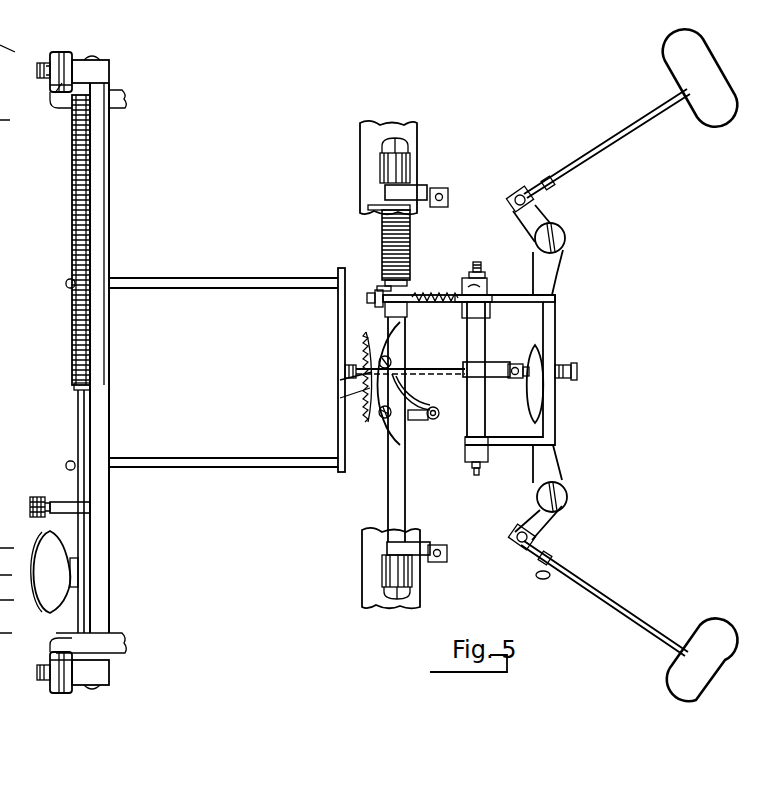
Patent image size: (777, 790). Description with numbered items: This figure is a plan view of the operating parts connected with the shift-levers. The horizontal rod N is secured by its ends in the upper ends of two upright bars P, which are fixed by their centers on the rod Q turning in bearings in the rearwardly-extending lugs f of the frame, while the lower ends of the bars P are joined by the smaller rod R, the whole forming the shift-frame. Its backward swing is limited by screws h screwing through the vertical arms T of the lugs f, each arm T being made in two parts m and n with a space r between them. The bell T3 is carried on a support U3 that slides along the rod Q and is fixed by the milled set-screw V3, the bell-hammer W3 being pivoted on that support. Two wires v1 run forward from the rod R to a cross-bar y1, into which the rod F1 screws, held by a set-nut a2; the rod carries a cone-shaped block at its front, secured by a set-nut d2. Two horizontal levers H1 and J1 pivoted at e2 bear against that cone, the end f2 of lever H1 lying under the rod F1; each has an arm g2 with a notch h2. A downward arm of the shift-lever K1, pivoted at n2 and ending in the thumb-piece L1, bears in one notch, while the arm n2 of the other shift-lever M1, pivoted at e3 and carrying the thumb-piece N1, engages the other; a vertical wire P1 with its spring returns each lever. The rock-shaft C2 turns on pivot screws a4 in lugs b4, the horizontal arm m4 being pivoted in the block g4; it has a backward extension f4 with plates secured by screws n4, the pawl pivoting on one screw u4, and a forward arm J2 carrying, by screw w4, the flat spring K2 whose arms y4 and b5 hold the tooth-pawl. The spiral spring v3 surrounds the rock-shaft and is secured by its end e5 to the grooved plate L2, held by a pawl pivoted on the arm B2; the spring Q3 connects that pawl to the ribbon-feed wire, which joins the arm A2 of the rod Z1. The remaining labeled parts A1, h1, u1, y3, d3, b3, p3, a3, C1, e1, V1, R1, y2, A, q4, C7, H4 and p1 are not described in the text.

The horizontal rod N is at (109, 193).
The rack A1 is at (72, 236).
The vertical arm T is at (52, 652).
The screw h is at (36, 672).
The part of vertical arm m is at (76, 705).
The upright bar P is at (124, 672).
The lug f is at (133, 643).
The rear part of vertical arm n is at (50, 705).
The space r is at (50, 626).
The rod Q is at (74, 394).
The rod R is at (78, 418).
The wire v1 is at (196, 462).
The cross-bar y1 is at (338, 339).
The set-screw V3 is at (26, 506).
The bell hammer W3 is at (56, 512).
The bell T3 is at (38, 556).
The bell support U3 is at (78, 570).
The set-nut a2 is at (345, 370).
The rod F1 is at (436, 372).
The securing-screw u4 is at (368, 422).
The link h1 is at (333, 391).
The link u1 is at (331, 407).
The backward extension f4 is at (388, 432).
The securing-screw n4 is at (392, 424).
The horizontal arm J2 is at (416, 420).
The screw w4 is at (439, 413).
The spring arm b5 is at (418, 398).
The flat spring K2 is at (437, 389).
The rod Z1 is at (470, 405).
The spring arm y4 is at (408, 420).
The grooved plate L2 is at (375, 302).
The spring end e5 is at (380, 286).
The spiral spring Q3 is at (504, 460).
The arm B2 is at (407, 310).
The pin y3 is at (455, 302).
The rock-shaft C2 is at (405, 495).
The block d3 is at (452, 456).
The screw b3 is at (456, 468).
The pin p3 is at (490, 295).
The pin a3 is at (512, 445).
The arm A2 is at (490, 312).
The lever end f2 is at (512, 358).
The bearing block C1 is at (523, 378).
The pin e1 is at (545, 355).
The disc V1 is at (520, 392).
The set-nut d2 is at (577, 371).
The frame R1 is at (555, 395).
The arm y2 is at (566, 415).
The horizontal lever J1 is at (556, 465).
The frame bracket A is at (350, 563).
The pivot screw a4 is at (396, 610).
The lug b4 is at (432, 568).
The pin q4 is at (459, 167).
The horizontal arm m4 is at (428, 528).
The block C7 is at (455, 180).
The vertical wire P1 is at (486, 183).
The spiral spring v3 is at (382, 250).
The block H4 is at (447, 553).
The block g4 is at (448, 538).
The notch h2 is at (570, 527).
The shift-lever K1 is at (607, 143).
The pivot / downwardly-projecting arm n2 is at (556, 183).
The thumb-piece L1 is at (700, 78).
The lever arm g2 is at (565, 516).
The pivot e2 is at (582, 497).
The horizontal lever H1 is at (552, 280).
The pivot p1 is at (510, 545).
The shift-lever M1 is at (580, 572).
The pivot e3 is at (549, 581).
The thumb-piece N1 is at (702, 659).